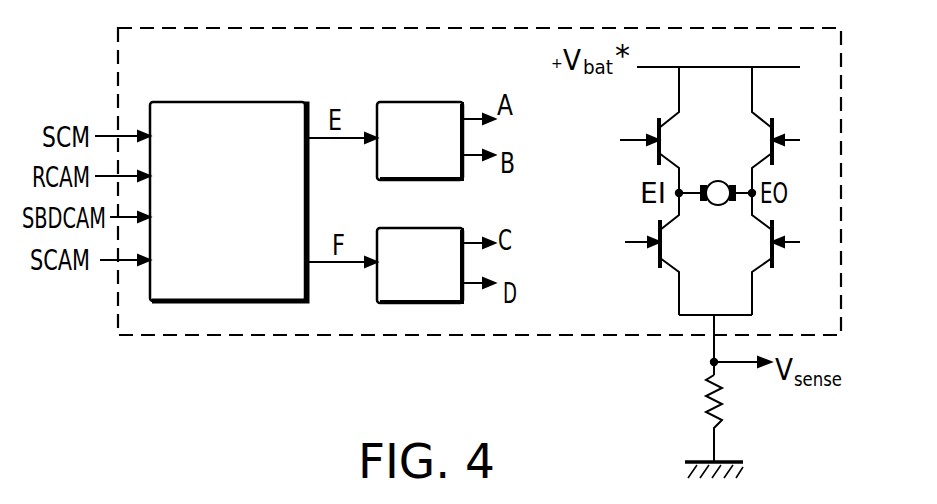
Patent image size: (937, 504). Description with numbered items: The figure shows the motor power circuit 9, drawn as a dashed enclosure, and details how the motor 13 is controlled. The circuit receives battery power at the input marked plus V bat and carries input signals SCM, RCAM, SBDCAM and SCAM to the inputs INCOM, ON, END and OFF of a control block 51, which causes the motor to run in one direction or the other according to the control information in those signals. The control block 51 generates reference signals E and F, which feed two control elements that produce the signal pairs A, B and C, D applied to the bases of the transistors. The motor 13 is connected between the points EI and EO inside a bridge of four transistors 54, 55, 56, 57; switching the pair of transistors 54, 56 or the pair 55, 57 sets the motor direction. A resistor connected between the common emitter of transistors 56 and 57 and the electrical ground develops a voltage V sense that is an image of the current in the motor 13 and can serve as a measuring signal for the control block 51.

The motor power circuit 9 is at (226, 336).
The control block 51 is at (210, 102).
The transistor 54 is at (657, 128).
The transistor 55 is at (775, 128).
The transistor 56 is at (774, 262).
The transistor 57 is at (660, 262).
The motor 13 is at (714, 205).